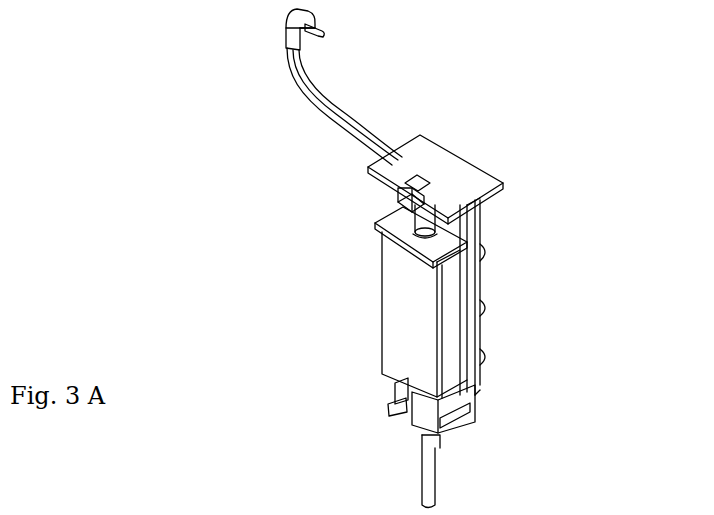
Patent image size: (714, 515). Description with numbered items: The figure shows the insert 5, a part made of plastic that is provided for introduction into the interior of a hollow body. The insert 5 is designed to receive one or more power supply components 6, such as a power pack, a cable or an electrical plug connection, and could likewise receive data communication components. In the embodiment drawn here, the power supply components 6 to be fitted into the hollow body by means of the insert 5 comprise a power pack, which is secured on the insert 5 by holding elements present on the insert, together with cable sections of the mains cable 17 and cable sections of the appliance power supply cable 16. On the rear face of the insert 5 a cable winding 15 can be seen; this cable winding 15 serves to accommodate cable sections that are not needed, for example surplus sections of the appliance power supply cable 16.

The insert 5 is at (575, 202).
The power supply components 6 is at (413, 298).
The cable winding 15 is at (500, 311).
The appliance power supply cable 16 is at (300, 103).
The mains cable 17 is at (425, 467).